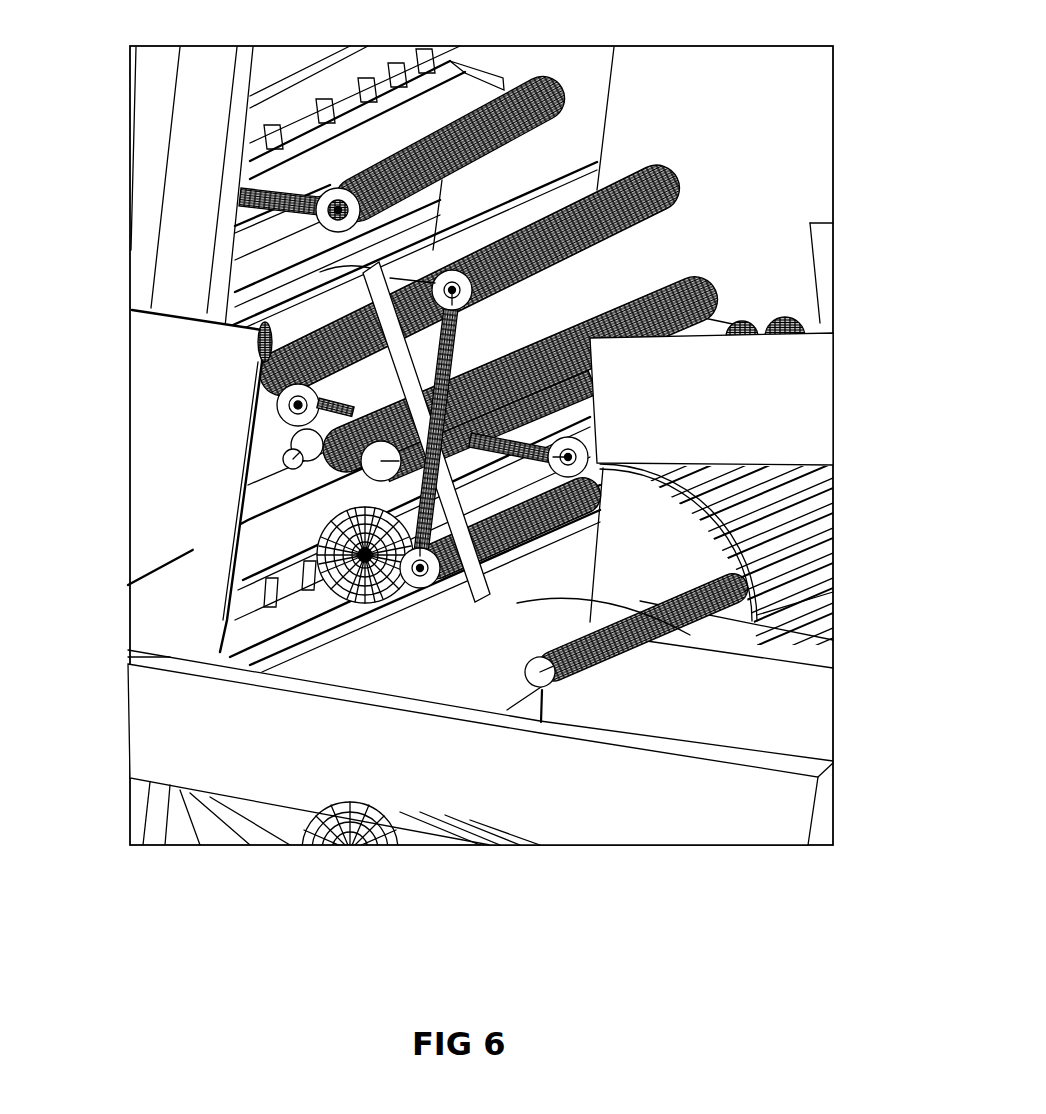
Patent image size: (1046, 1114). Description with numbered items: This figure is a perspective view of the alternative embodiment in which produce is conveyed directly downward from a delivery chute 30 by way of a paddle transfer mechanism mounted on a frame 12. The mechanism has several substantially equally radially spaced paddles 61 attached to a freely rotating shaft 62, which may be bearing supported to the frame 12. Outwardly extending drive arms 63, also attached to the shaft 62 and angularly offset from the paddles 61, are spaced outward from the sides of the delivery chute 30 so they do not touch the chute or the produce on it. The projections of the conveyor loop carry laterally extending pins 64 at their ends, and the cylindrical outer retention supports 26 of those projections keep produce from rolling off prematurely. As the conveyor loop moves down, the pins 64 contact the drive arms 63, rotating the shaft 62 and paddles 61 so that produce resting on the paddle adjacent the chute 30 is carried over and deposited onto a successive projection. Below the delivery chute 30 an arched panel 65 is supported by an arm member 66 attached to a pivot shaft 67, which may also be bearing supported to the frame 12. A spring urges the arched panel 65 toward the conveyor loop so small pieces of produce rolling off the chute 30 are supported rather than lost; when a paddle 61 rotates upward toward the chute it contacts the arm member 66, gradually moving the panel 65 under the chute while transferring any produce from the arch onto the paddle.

The frame 12 is at (756, 815).
The second outer retention support 26 is at (563, 75).
The delivery chute 30 is at (760, 418).
The paddles 61 is at (690, 160).
The shaft 62 is at (180, 571).
The drive arms 63 is at (600, 293).
The extension pins 64 is at (268, 446).
The arched panel 65 is at (745, 525).
The arm member 66 is at (623, 575).
The pivot shaft 67 is at (551, 680).